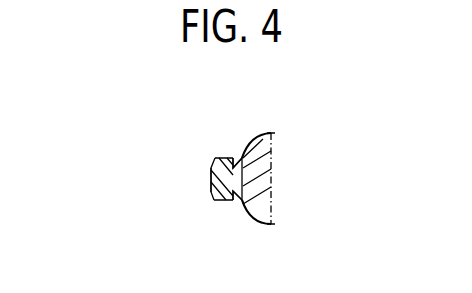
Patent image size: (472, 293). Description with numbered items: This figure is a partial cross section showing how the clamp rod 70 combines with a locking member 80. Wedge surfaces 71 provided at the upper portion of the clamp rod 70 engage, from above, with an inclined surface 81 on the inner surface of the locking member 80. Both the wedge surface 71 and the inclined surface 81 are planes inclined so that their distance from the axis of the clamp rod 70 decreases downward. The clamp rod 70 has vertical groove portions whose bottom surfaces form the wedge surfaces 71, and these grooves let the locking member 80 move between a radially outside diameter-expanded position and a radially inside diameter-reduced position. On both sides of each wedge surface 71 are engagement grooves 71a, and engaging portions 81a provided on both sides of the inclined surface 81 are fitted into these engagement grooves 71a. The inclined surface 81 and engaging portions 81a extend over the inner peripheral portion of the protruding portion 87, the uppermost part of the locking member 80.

The clamp rod 70 is at (266, 147).
The wedge surface 71 is at (244, 182).
The engagement groove 71a is at (233, 157).
The locking member 80 is at (215, 158).
The inclined surface 81 is at (235, 196).
The engaging portion 81a is at (233, 202).
The protruding portion 87 is at (211, 173).